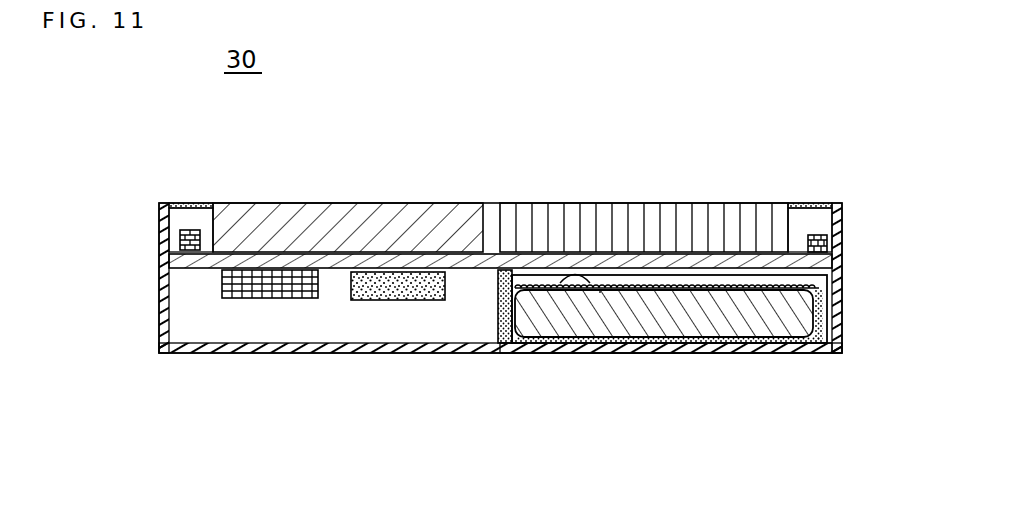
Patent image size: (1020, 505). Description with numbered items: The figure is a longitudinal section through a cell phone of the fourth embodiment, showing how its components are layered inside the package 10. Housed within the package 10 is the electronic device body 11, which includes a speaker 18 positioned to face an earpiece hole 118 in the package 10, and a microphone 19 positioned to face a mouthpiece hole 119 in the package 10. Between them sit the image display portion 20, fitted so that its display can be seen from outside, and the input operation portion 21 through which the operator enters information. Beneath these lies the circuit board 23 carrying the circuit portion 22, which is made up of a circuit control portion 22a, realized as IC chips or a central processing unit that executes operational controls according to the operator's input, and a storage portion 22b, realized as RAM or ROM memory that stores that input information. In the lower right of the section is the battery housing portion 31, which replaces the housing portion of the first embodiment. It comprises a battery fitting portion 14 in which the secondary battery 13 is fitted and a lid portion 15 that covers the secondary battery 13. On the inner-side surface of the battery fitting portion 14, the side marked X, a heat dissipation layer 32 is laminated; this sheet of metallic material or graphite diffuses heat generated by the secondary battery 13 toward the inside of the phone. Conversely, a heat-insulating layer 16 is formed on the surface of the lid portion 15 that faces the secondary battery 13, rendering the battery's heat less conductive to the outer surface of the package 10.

The package 10 is at (188, 354).
The electronic device body 11 is at (417, 184).
The secondary battery 13 is at (700, 322).
The battery fitting portion 14 is at (836, 320).
The lid portion 15 is at (765, 350).
The heat-insulating layer 16 is at (515, 348).
The speaker 18 is at (182, 231).
The microphone 19 is at (822, 233).
The image display portion 20 is at (328, 204).
The input operation portion 21 is at (574, 214).
The circuit portion 22 is at (385, 398).
The circuit control portion 22a is at (268, 300).
The storage portion 22b is at (372, 302).
The circuit board 23 is at (473, 262).
The battery housing portion 31 is at (832, 289).
The heat dissipation layer 32 is at (607, 290).
The earpiece hole 118 is at (192, 204).
The mouthpiece hole 119 is at (815, 205).
The inner side X is at (600, 293).